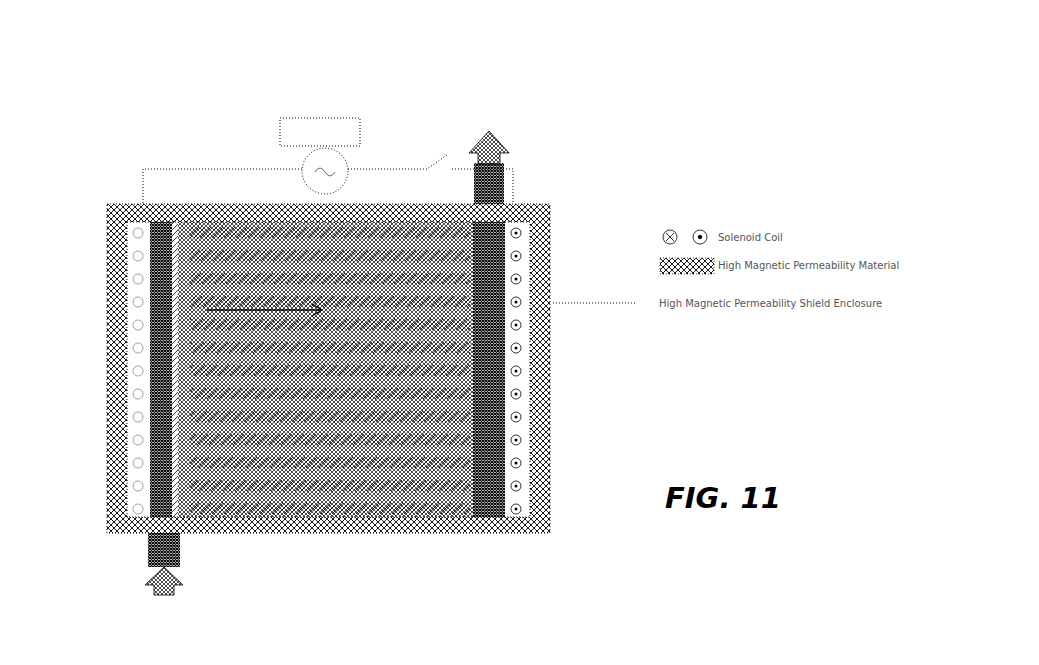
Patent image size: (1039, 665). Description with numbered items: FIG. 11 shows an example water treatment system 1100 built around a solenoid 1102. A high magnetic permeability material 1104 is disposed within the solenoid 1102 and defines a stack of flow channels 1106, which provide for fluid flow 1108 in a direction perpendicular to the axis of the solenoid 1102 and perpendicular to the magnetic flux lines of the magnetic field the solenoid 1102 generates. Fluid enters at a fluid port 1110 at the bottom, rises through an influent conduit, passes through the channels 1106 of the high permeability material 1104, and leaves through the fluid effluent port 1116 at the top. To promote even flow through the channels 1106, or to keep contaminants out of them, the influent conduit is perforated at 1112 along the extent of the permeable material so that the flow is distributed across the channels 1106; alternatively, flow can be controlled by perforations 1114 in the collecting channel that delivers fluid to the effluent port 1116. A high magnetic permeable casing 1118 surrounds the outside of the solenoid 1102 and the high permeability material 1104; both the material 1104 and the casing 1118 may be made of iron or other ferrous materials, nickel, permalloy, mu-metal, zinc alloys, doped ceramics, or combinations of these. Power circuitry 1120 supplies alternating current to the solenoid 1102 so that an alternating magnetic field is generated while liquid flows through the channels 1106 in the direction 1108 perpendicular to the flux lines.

The system 1100 is at (512, 69).
The solenoid 1102 is at (513, 350).
The high magnetic permeability material 1104 is at (223, 227).
The flow channels 1106 is at (267, 264).
The fluid flow 1108 is at (312, 306).
The fluid port 1110 is at (168, 590).
The perforations of influent conduit 1112 is at (175, 337).
The perforations 1114 is at (478, 468).
The fluid effluent port 1116 is at (492, 143).
The high magnetic permeable casing 1118 is at (538, 408).
The power circuitry 1120 is at (322, 150).